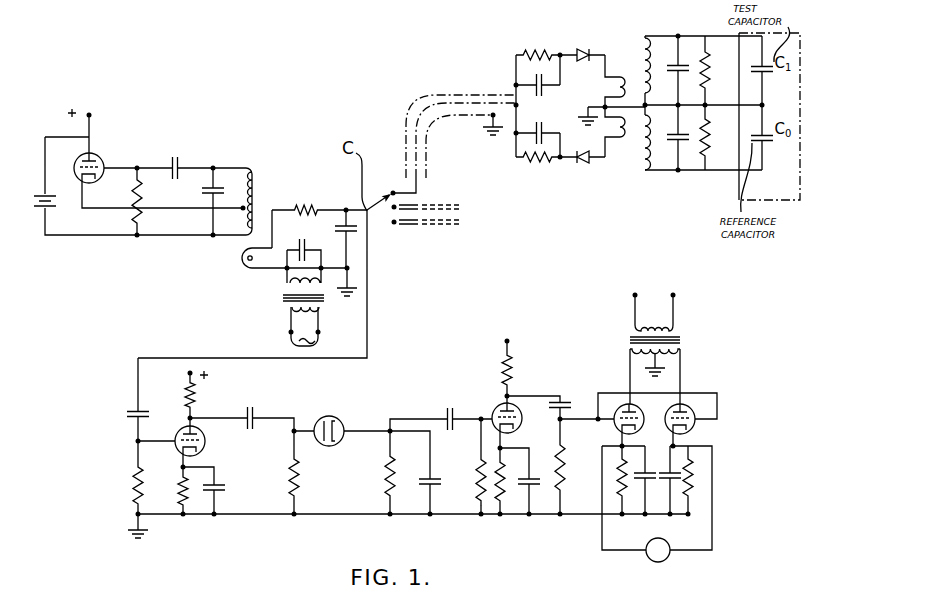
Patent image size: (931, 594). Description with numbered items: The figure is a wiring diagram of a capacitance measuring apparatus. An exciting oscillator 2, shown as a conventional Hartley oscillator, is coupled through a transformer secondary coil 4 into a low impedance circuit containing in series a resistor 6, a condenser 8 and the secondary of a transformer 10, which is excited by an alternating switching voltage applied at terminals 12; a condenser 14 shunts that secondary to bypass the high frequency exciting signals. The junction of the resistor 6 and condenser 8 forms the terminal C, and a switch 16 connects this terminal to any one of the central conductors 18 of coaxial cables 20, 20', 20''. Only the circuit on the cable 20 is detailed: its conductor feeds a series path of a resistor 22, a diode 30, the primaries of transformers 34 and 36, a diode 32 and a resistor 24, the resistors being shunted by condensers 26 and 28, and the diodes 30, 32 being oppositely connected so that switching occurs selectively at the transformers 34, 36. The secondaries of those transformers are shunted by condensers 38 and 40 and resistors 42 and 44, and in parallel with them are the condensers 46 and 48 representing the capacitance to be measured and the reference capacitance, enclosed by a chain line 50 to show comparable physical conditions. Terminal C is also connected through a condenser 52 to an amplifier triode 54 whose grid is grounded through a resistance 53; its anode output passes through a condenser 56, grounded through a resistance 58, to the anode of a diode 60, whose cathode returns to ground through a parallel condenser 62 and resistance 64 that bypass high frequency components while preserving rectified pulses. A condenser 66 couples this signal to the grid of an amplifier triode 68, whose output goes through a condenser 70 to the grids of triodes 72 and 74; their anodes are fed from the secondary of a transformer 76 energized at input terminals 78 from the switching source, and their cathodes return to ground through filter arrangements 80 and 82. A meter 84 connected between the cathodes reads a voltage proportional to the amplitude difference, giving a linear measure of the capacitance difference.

The exciting oscillator 2 is at (136, 159).
The transformer secondary coil 4 is at (254, 259).
The resistor 6 is at (300, 206).
The condenser 8 is at (357, 226).
The transformer 10 is at (282, 297).
The terminals 12 is at (290, 340).
The condenser 14 is at (308, 243).
The switch 16 is at (381, 203).
The conductors 18 is at (422, 189).
The coaxial cable 20 is at (461, 125).
The coaxial cable 20' is at (447, 195).
The coaxial cable 20'' is at (448, 233).
The resistor 22 is at (535, 52).
The resistor 24 is at (540, 159).
The condenser 26 is at (545, 89).
The condenser 28 is at (551, 125).
The diode 30 is at (585, 52).
The diode 32 is at (592, 162).
The transformer 34 is at (634, 67).
The transformer 36 is at (635, 142).
The condenser 38 is at (682, 64).
The condenser 40 is at (683, 146).
The resistor 42 is at (710, 58).
The resistor 44 is at (710, 130).
The condenser 46 is at (768, 74).
The condenser 48 is at (768, 141).
The chain line 50 is at (737, 46).
The condenser 52 is at (131, 409).
The resistance 53 is at (130, 473).
The triode 54 is at (205, 443).
The condenser 56 is at (256, 410).
The resistance 58 is at (296, 478).
The diode 60 is at (340, 419).
The condenser 62 is at (434, 479).
The resistance 64 is at (382, 472).
The condenser 66 is at (448, 411).
The amplifier triode 68 is at (496, 406).
The condenser 70 is at (568, 389).
The triode 72 is at (618, 430).
The triode 74 is at (699, 426).
The transformer 76 is at (690, 338).
The input terminals 78 is at (663, 285).
The filter arrangement 80 is at (639, 488).
The filter arrangement 82 is at (678, 488).
The meter 84 is at (669, 557).